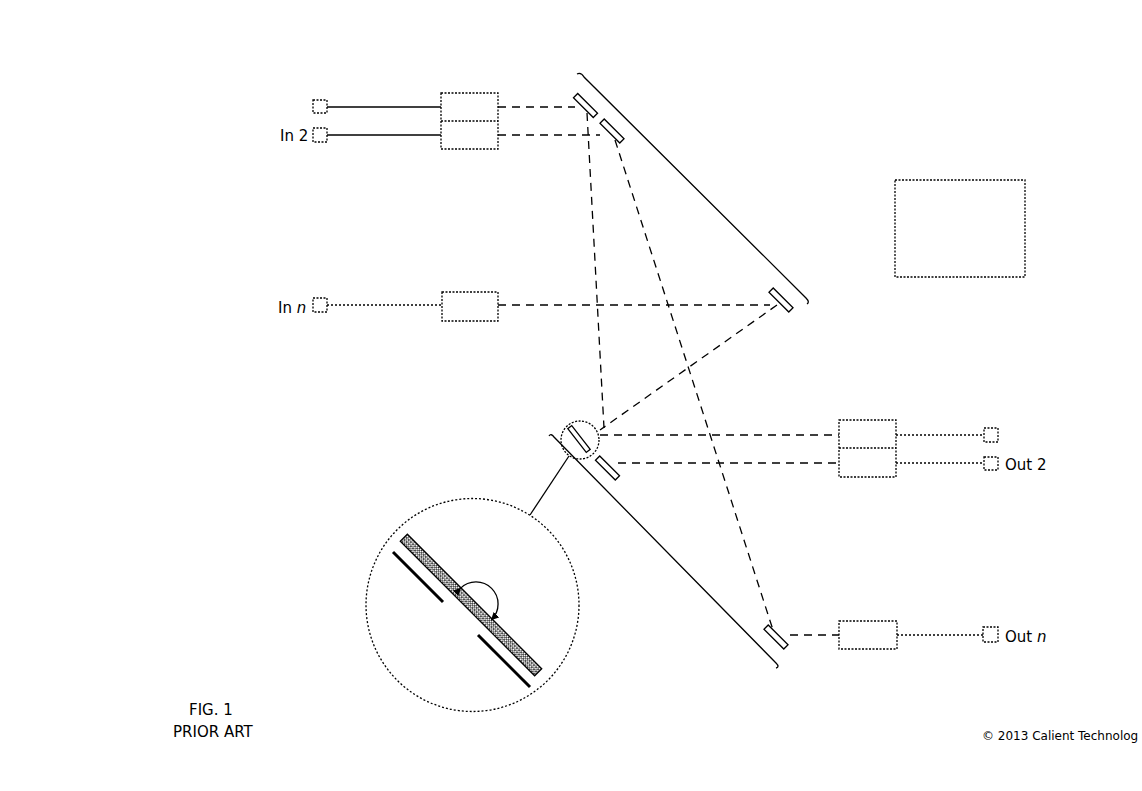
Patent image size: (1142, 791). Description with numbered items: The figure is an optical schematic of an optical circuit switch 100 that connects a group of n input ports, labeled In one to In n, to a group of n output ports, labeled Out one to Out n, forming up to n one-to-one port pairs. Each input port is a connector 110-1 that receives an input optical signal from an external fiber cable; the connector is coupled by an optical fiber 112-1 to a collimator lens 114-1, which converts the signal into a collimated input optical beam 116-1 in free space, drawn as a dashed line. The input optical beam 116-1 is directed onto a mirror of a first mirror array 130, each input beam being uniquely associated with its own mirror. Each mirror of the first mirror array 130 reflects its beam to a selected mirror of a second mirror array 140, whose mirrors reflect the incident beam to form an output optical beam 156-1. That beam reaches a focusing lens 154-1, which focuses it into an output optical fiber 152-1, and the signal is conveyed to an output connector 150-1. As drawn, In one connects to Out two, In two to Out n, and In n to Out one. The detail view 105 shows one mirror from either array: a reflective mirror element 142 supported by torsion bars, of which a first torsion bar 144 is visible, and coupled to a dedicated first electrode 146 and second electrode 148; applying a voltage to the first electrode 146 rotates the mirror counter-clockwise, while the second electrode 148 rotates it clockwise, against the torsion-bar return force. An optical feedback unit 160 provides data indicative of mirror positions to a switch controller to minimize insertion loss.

The optical circuit switch 100 is at (1030, 46).
The detail view 105 is at (530, 697).
The connector 110-1 is at (322, 100).
The optical fiber 112-1 is at (357, 103).
The collimator lens 114-1 is at (460, 92).
The input optical beam 116-1 is at (543, 107).
The first mirror array 130 is at (702, 191).
The second mirror array 140 is at (655, 549).
The reflective mirror element 142 is at (438, 557).
The first torsion bar 144 is at (474, 603).
The first electrode 146 is at (415, 577).
The second electrode 148 is at (500, 660).
The connector 150-1 is at (993, 428).
The output optical fiber 152-1 is at (938, 432).
The focusing lens 154-1 is at (867, 420).
The output optical beam 156-1 is at (810, 432).
The optical feedback unit 160 is at (960, 228).